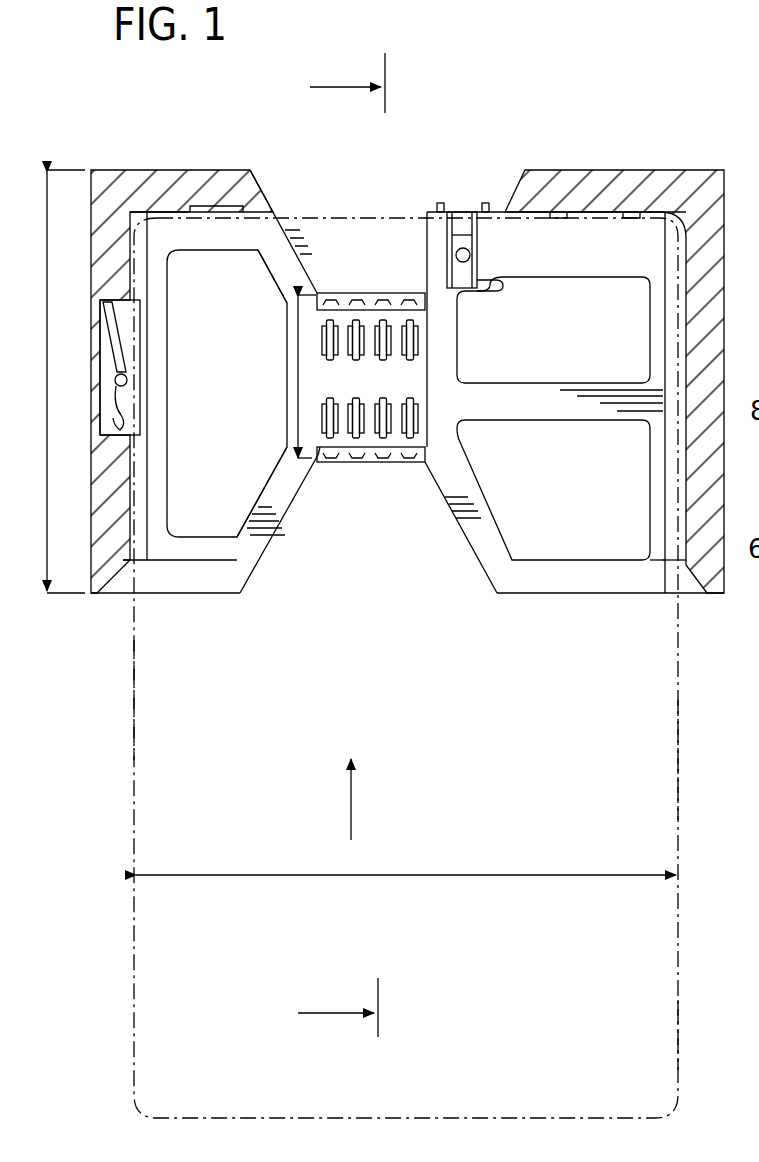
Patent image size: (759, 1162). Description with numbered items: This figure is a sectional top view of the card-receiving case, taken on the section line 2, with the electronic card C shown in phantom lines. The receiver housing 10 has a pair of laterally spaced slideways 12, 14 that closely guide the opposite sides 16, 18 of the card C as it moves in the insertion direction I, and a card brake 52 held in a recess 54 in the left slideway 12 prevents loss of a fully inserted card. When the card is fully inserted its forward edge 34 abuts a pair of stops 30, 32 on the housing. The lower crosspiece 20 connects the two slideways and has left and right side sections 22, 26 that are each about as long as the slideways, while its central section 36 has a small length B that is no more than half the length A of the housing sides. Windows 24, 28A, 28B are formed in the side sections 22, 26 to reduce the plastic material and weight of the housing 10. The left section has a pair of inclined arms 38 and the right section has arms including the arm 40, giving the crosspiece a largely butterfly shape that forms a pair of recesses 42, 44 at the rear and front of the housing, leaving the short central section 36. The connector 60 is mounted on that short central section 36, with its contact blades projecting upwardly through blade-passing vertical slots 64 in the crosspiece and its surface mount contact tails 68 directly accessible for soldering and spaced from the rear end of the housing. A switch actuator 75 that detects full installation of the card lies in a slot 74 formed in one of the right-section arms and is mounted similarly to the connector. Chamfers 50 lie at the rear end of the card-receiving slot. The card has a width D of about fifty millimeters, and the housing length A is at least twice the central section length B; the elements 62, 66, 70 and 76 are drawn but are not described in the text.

The receiver housing 10 is at (737, 162).
The slideway 12 is at (135, 484).
The slideway 14 is at (665, 447).
The card side 16 is at (136, 718).
The card side 18 is at (677, 801).
The lower crosspiece 20 is at (258, 571).
The left side section 22 is at (212, 553).
The window 24 is at (206, 392).
The right side section 26 is at (550, 578).
The window 28A is at (534, 383).
The window 28B is at (548, 560).
The stop 30 is at (208, 232).
The stop 32 is at (584, 227).
The forward edge of card 34 is at (300, 212).
The central section 36 is at (323, 378).
The inclined arm 38 is at (282, 273).
The arm 40 is at (495, 553).
The recess 42 is at (362, 466).
The recess 44 is at (358, 275).
The chamfer 50 is at (147, 578).
The card brake 52 is at (138, 363).
The recess 54 is at (112, 396).
The connector 60 is at (340, 462).
The contact 62 is at (380, 359).
The blade-passing vertical slot 64 is at (325, 337).
The cup 66 is at (597, 978).
The contact tail 68 is at (410, 462).
The pin 70 is at (491, 196).
The slot 74 is at (470, 281).
The switch actuator 75 is at (491, 284).
The slot 76 is at (463, 226).
The section line 2 is at (341, 545).
The housing length A is at (62, 381).
The central section length B is at (288, 425).
The electronic card C is at (643, 1037).
The card width D is at (183, 874).
The insertion direction I is at (338, 822).